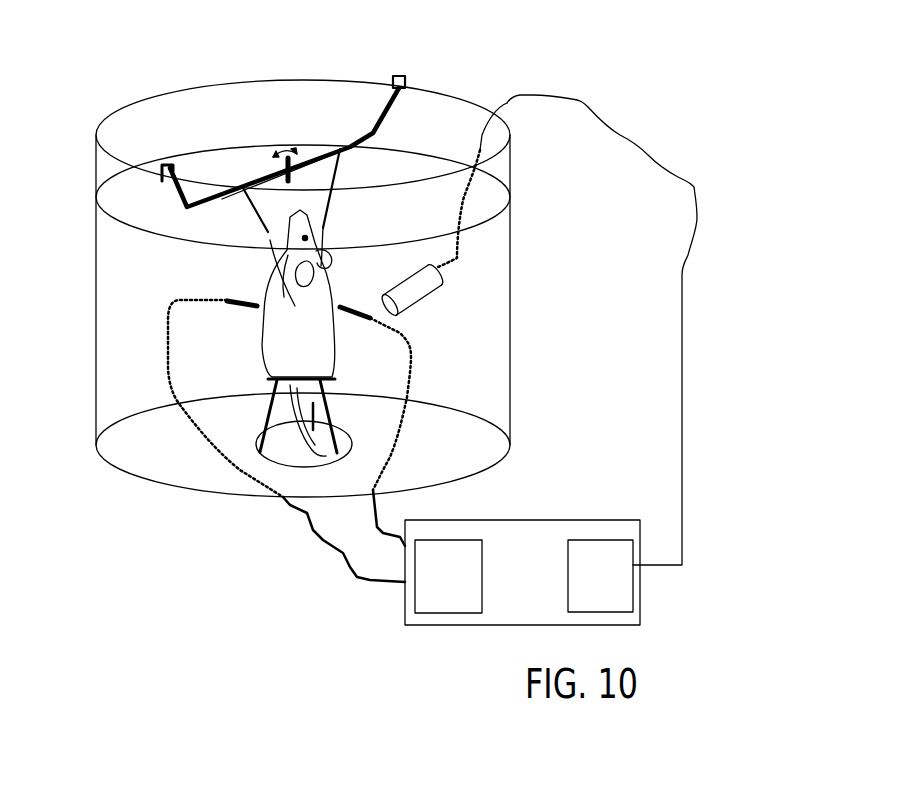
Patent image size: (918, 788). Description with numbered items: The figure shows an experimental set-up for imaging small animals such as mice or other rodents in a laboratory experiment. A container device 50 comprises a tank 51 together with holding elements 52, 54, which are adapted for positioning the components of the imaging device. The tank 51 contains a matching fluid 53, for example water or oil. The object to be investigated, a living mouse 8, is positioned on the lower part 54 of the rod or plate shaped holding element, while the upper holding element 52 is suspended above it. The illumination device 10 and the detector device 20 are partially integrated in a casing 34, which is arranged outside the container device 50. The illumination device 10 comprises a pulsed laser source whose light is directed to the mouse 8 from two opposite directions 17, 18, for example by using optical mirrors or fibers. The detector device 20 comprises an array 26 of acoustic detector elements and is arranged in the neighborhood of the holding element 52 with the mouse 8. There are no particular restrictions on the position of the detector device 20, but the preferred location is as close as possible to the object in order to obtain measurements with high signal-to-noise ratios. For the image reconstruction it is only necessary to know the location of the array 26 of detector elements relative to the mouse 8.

The living mouse 8 is at (309, 342).
The illumination device 10 is at (456, 594).
The first illumination direction 17 is at (170, 364).
The second illumination direction 18 is at (412, 373).
The detector device 20 is at (618, 584).
The array of acoustic detector elements 26 is at (440, 283).
The casing 34 is at (532, 541).
The container device 50 is at (108, 98).
The tank 51 is at (330, 80).
The holding element 52 is at (254, 176).
The matching fluid 53 is at (400, 165).
The lower part of holding element 54 is at (278, 457).